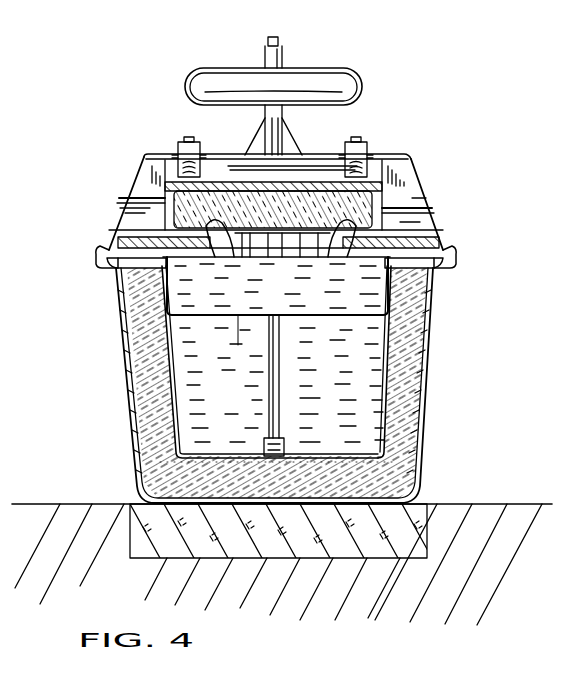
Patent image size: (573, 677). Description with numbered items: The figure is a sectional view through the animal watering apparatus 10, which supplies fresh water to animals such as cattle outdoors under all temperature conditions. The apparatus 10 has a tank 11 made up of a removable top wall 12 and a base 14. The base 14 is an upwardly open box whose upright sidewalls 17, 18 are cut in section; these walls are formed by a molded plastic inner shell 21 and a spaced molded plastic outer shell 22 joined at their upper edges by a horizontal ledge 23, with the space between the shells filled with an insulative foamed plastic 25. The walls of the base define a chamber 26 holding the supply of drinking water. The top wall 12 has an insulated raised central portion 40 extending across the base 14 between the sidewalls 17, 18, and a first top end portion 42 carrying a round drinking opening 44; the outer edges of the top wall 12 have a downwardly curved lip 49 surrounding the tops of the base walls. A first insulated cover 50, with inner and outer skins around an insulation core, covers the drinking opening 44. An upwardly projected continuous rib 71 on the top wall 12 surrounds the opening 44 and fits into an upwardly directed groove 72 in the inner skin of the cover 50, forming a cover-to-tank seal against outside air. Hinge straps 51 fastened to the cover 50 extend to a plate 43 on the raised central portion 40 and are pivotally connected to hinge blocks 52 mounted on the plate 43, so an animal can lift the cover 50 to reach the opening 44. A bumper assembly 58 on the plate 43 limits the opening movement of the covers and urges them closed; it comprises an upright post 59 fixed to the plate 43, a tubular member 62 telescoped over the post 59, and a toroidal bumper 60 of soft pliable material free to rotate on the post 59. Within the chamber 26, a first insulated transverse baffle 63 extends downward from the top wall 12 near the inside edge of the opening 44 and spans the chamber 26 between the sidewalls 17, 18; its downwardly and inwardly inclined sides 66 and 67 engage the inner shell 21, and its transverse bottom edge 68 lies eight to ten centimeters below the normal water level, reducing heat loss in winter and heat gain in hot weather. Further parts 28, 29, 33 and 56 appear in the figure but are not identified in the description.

The animal watering apparatus 10 is at (272, 265).
The tank 11 is at (260, 375).
The top wall 12 is at (264, 199).
The base 14 is at (281, 380).
The sidewall 17 is at (124, 345).
The sidewall 18 is at (433, 318).
The inner shell 21 is at (164, 406).
The outer shell 22 is at (140, 456).
The horizontal ledge 23 is at (120, 298).
The foamed plastic 25 is at (137, 425).
The chamber 26 is at (243, 398).
The support rod 28 is at (293, 385).
The base 29 is at (285, 448).
The foundation pad 33 is at (415, 525).
The raised central portion 40 is at (410, 180).
The first top end portion 42 is at (425, 224).
The plate 43 is at (314, 154).
The first drinking opening 44 is at (276, 309).
The downwardly curved lip 49 is at (98, 256).
The first insulated cover 50 is at (236, 190).
The hinge straps 51 is at (202, 152).
The hinge blocks 52 is at (186, 140).
The clamp 56 is at (356, 140).
The bumper assembly 58 is at (284, 91).
The upright post 59 is at (281, 41).
The toroidal bumper 60 is at (218, 73).
The tubular member 62 is at (268, 62).
The first insulated transverse baffle 63 is at (318, 298).
The inclined side 66 is at (172, 305).
The inclined side 67 is at (368, 300).
The transverse bottom edge 68 is at (238, 318).
The continuous rib 71 is at (332, 244).
The groove 72 is at (206, 228).